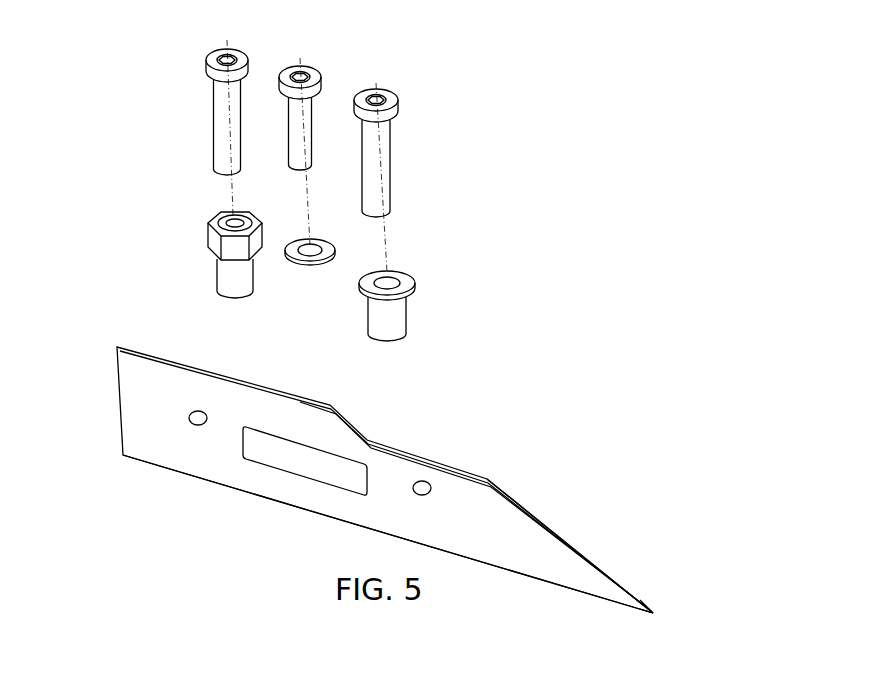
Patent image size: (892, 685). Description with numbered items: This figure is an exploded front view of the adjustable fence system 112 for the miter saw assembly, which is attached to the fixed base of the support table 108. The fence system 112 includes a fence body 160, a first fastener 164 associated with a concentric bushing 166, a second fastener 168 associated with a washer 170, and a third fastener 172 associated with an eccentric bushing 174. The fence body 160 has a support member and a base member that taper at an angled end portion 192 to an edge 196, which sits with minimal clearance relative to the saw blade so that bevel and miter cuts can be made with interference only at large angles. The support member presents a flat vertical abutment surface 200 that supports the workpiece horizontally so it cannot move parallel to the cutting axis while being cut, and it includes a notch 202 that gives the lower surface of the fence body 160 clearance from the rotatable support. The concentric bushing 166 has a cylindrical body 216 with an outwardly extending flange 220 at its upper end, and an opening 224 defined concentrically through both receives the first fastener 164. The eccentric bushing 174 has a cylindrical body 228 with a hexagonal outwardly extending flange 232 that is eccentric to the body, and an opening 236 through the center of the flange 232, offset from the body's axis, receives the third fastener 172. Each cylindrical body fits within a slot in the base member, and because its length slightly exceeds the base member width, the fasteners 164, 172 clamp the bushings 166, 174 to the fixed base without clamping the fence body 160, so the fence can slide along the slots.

The adjustable fence system 112 is at (537, 166).
The third fastener 172 is at (242, 57).
The second fastener 168 is at (317, 77).
The first fastener 164 is at (393, 114).
The washer 170 is at (311, 242).
The eccentric bushing 174 is at (236, 254).
The opening 236 is at (234, 214).
The hexagonal outwardly extending flange 232 is at (213, 226).
The cylindrical body 228 is at (218, 266).
The concentric bushing 166 is at (386, 299).
The opening 224 is at (390, 271).
The outwardly extending flange 220 is at (403, 289).
The cylindrical body 216 is at (398, 320).
The fence body 160 is at (395, 480).
The support table 108 is at (152, 397).
The flat vertical abutment surface 200 is at (202, 461).
The notch 202 is at (339, 520).
The angled end portion 192 is at (543, 540).
The edge 196 is at (658, 612).